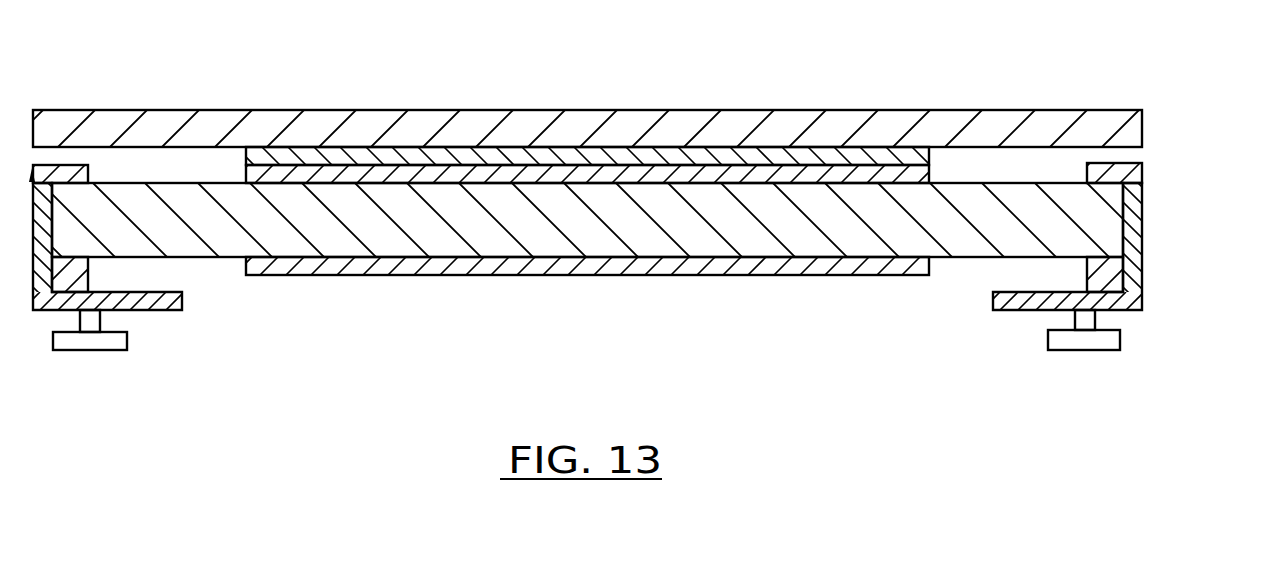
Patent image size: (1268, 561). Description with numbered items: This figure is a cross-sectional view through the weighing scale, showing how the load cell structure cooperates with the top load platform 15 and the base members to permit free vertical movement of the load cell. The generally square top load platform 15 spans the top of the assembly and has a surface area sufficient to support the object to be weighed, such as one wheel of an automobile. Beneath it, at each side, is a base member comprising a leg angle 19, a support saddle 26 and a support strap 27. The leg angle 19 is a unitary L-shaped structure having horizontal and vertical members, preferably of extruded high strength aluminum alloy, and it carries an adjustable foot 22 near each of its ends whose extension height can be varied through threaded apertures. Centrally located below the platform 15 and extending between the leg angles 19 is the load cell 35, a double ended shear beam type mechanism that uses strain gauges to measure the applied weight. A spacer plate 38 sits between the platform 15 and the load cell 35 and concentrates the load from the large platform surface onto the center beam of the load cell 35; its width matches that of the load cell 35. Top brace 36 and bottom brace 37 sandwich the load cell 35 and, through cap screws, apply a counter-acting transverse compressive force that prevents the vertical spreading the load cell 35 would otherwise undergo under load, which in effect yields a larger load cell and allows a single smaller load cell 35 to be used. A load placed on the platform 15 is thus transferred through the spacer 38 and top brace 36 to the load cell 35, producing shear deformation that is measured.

The top load platform 15 is at (556, 104).
The leg angle 19 is at (1152, 217).
The adjustable foot 22 is at (88, 362).
The support saddle 26 is at (1122, 272).
The support strap 27 is at (1152, 155).
The load cell 35 is at (385, 236).
The top brace 36 is at (282, 164).
The bottom brace 37 is at (694, 288).
The spacer plate 38 is at (758, 150).